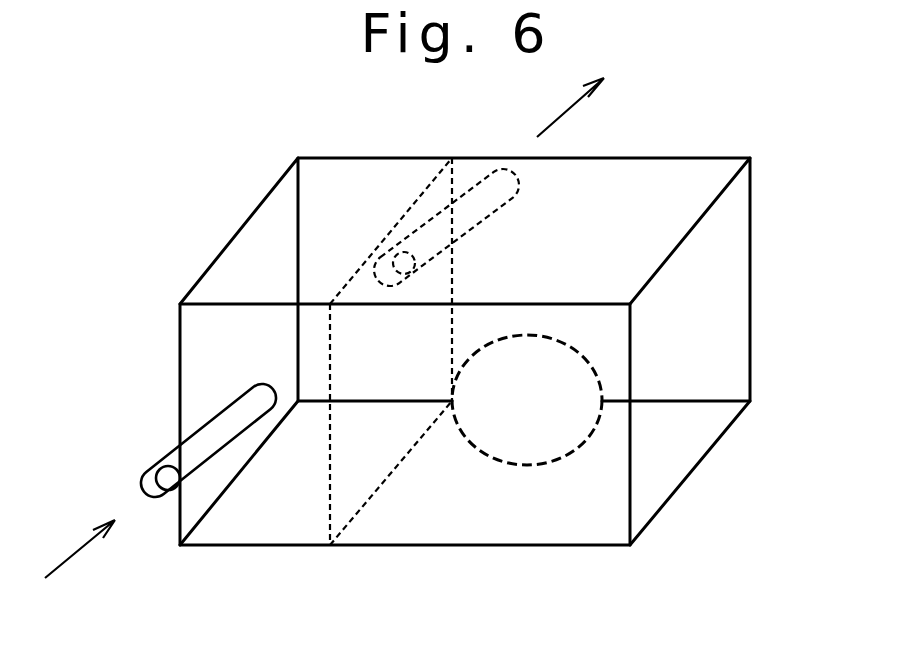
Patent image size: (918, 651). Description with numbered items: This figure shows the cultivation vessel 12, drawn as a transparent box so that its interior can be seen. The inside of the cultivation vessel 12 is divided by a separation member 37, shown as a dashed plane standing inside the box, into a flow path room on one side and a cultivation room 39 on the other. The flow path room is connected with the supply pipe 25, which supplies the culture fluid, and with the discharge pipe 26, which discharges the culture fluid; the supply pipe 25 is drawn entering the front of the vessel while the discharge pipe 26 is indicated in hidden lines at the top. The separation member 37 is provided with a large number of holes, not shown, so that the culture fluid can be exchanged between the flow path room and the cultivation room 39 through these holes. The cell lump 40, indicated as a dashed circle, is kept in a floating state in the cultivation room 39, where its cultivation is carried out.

The cultivation vessel 12 is at (612, 199).
The supply pipe 25 is at (192, 459).
The discharge pipe 26 is at (495, 180).
The separation member 37 is at (367, 457).
The cultivation room 39 is at (243, 257).
The cell lump 40 is at (543, 463).